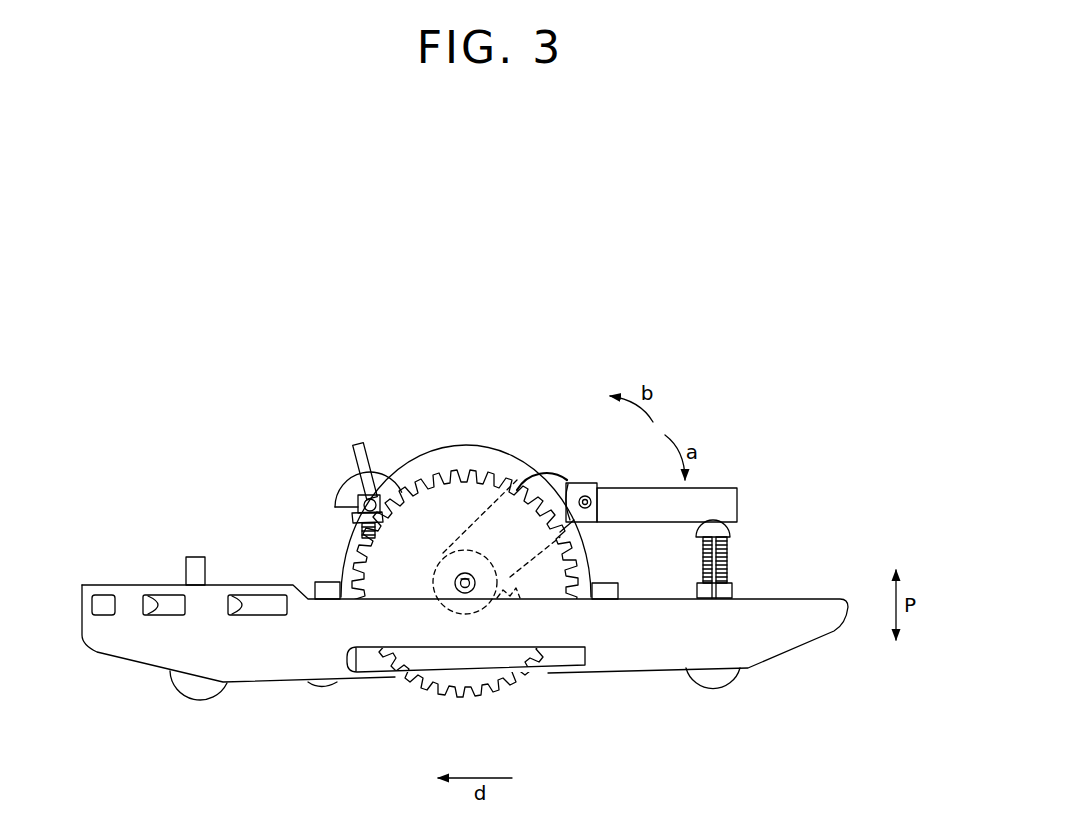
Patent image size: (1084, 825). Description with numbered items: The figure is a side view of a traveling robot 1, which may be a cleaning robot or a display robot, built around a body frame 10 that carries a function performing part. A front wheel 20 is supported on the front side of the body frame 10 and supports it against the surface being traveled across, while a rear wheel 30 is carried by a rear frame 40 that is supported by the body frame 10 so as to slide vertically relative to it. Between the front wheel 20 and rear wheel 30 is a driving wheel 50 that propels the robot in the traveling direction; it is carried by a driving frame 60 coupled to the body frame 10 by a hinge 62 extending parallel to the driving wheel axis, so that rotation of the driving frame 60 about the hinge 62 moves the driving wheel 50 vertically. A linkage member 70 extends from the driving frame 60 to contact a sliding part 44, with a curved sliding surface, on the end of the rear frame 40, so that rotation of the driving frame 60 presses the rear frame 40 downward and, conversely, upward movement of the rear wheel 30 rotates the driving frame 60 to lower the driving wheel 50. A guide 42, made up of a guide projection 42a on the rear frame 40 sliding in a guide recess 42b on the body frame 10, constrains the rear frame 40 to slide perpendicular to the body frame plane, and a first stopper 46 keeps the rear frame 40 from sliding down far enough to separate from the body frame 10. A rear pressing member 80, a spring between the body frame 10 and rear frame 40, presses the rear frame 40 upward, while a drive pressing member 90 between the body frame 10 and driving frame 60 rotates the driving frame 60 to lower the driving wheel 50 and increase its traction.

The traveling robot 1 is at (182, 390).
The body frame 10 is at (624, 652).
The front wheel 20 is at (199, 695).
The rear wheel 30 is at (716, 695).
The rear frame 40 is at (697, 565).
The guide 42 is at (845, 533).
The guide projection 42a is at (725, 548).
The guide recess 42b is at (733, 585).
The sliding part 44 is at (740, 521).
The first stopper 46 is at (728, 598).
The driving wheel 50 is at (465, 675).
The driving frame 60 is at (487, 513).
The hinge 62 is at (517, 600).
The linkage member 70 is at (638, 488).
The rear pressing member 80 is at (698, 548).
The drive pressing member 90 is at (357, 528).